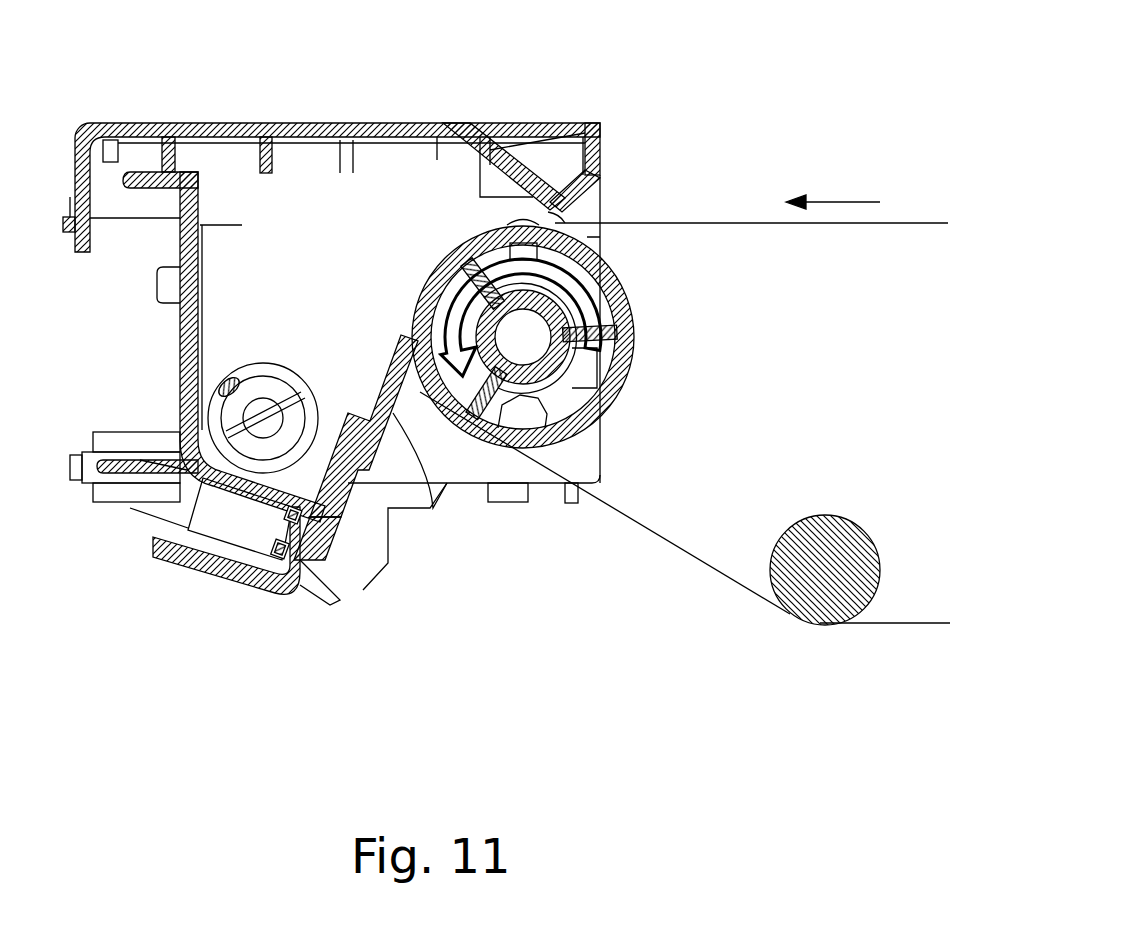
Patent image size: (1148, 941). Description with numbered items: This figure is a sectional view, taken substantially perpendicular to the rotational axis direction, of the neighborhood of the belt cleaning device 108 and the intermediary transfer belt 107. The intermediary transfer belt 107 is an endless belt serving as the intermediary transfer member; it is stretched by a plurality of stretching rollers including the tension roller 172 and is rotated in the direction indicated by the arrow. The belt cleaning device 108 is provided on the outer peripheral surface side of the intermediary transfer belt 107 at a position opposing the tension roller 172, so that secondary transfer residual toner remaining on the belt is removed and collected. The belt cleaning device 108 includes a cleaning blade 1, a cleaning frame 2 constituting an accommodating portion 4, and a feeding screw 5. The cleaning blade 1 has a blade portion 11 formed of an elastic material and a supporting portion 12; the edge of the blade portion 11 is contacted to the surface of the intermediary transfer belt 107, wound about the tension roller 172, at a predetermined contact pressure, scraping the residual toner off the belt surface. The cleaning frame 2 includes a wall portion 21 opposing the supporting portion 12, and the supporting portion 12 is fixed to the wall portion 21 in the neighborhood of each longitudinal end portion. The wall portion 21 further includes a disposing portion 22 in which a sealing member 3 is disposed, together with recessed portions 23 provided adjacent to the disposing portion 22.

The cleaning blade 1 is at (474, 506).
The cleaning frame 2 is at (175, 397).
The sealing member 3 is at (322, 548).
The accommodating portion 4 is at (297, 317).
The feeding screw 5 is at (241, 372).
The blade portion 11 is at (432, 509).
The supporting portion 12 is at (388, 522).
The wall portion 21 is at (308, 596).
The disposing portion 22 is at (314, 540).
The recessed portions 23 is at (300, 512).
The intermediary transfer belt 107 is at (692, 222).
The belt cleaning device 108 is at (122, 106).
The tension roller 172 is at (640, 314).